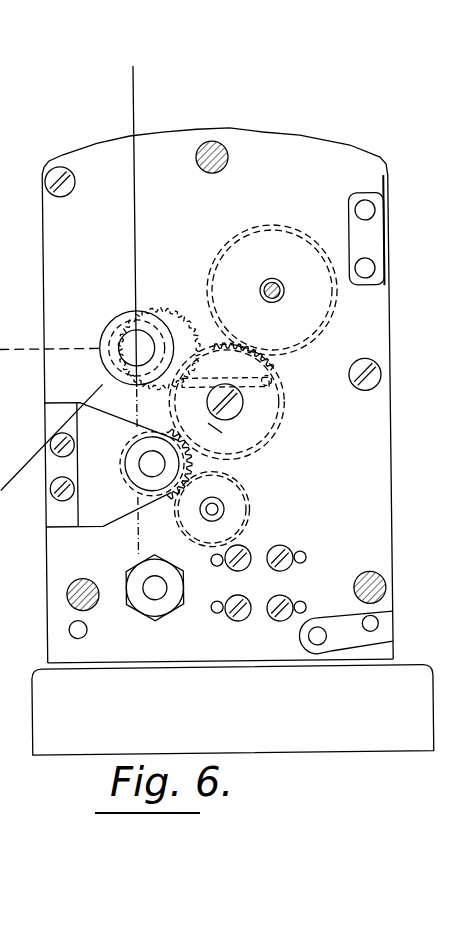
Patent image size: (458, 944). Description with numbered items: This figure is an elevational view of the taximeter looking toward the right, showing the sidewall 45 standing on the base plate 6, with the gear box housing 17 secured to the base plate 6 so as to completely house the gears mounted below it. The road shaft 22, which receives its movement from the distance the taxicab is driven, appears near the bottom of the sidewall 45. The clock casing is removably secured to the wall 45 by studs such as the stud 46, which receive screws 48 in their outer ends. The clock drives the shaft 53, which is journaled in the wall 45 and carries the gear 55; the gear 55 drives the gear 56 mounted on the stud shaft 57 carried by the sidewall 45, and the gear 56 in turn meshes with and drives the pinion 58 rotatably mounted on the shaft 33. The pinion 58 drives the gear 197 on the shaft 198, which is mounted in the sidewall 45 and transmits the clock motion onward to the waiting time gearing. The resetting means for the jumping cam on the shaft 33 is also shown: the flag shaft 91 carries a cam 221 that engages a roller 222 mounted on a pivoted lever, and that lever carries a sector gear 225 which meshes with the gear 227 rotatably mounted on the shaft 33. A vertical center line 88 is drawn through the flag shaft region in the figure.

The center line / shaft axis 88 is at (138, 93).
The screws 48 is at (233, 159).
The gear 55 is at (268, 229).
The shaft 53 is at (275, 279).
The flag shaft 91 is at (122, 340).
The roller 222 is at (168, 312).
The cam 221 is at (115, 370).
The gear 56 is at (287, 400).
The stud shaft 57 is at (236, 412).
The sector gear 225 is at (233, 438).
The sidewall 45 is at (377, 416).
The gear 227 is at (122, 468).
The shaft 33 is at (150, 465).
The pinion 58 is at (168, 480).
The gear 197 is at (261, 501).
The shaft 198 is at (211, 514).
The stud 46 is at (367, 577).
The road shaft 22 is at (152, 589).
The base plate 6 is at (169, 668).
The gear box housing 17 is at (233, 710).